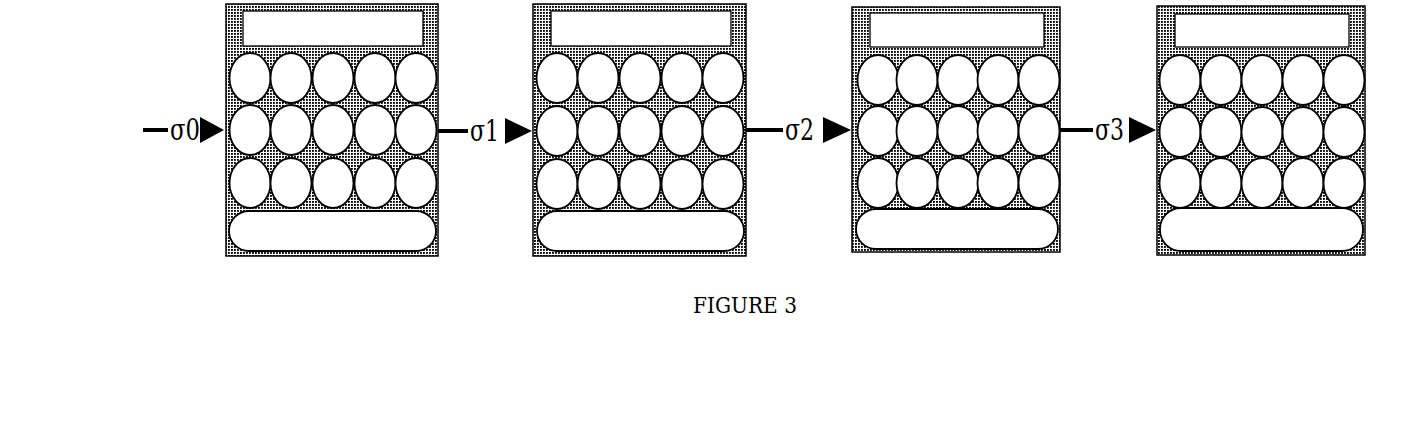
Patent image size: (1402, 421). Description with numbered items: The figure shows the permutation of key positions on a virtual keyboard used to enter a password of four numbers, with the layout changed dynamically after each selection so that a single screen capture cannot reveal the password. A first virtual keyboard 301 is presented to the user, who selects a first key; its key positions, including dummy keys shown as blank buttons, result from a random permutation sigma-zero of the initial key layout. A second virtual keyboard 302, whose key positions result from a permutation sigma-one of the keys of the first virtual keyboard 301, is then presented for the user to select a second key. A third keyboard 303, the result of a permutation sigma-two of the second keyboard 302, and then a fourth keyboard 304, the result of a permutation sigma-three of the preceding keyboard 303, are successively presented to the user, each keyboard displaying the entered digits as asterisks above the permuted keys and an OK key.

The first virtual keyboard 301 is at (290, 130).
The second virtual keyboard 302 is at (601, 130).
The third keyboard 303 is at (917, 129).
The fourth keyboard 304 is at (1221, 130).